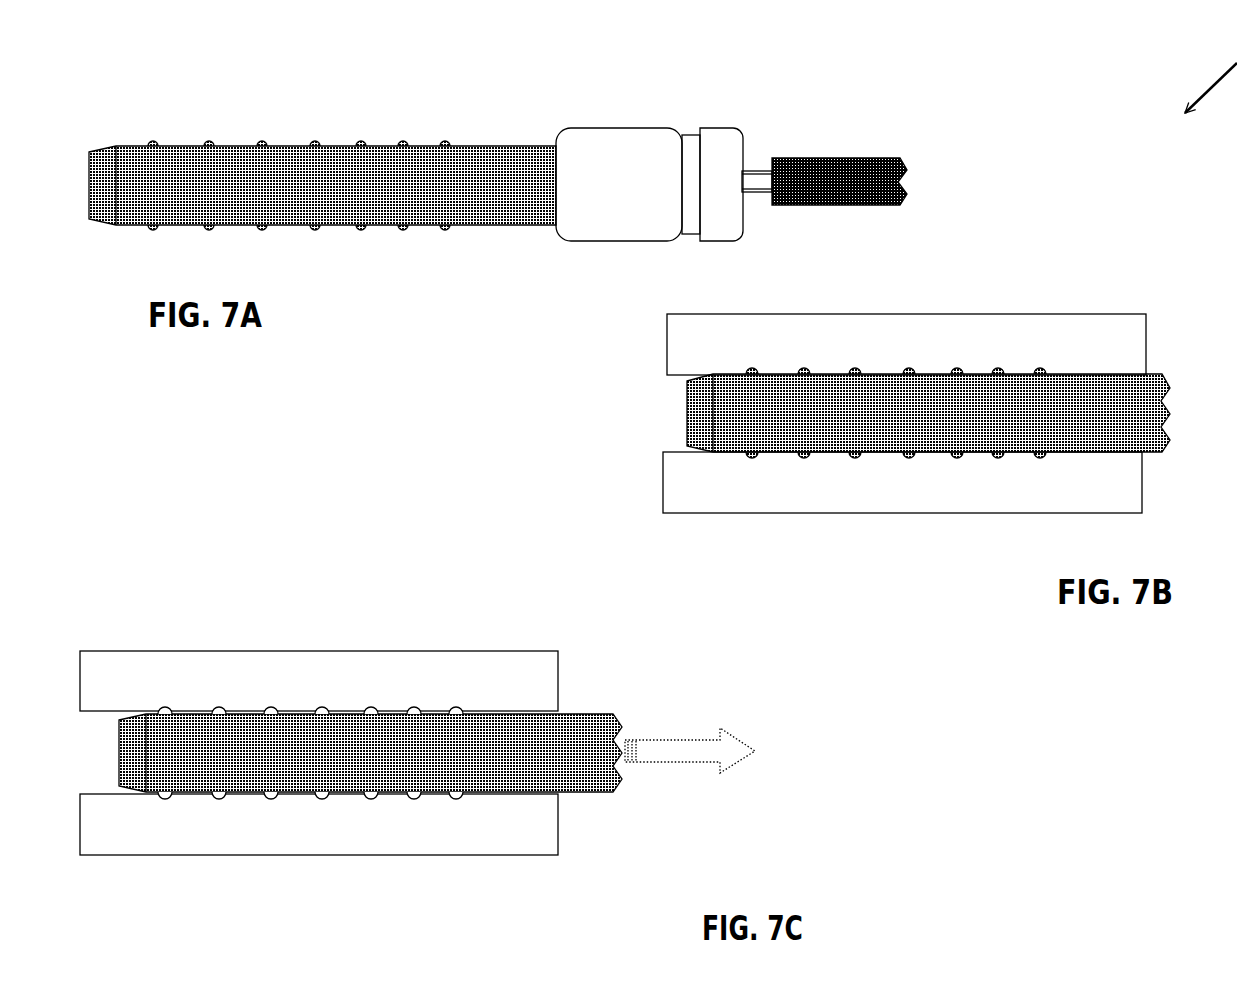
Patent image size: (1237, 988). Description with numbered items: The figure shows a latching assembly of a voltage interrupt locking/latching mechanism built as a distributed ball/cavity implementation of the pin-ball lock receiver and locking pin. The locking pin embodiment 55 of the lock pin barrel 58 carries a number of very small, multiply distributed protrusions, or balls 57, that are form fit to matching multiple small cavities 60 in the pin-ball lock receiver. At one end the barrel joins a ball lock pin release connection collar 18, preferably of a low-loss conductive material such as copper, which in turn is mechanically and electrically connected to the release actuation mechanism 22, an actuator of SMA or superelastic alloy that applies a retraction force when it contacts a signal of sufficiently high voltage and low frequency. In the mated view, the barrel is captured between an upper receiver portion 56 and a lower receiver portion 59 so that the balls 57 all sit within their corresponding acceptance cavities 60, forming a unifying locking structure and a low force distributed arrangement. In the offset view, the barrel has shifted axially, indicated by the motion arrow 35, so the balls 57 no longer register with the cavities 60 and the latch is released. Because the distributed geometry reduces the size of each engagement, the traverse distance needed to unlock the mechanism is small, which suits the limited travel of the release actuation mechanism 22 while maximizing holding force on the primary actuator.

In FIG. 7A, the ball lock pin release connection collar 18 is at (752, 184).
In FIG. 7A, the release actuation mechanism 22 is at (826, 172).
In FIG. 7C, the direction of movement arrow 35 is at (671, 771).
In FIG. 7B, the locking pin embodiment 55 is at (1153, 366).
In FIG. 7C, the upper die plate 56 is at (564, 711).
In FIG. 7A, the balls 57 is at (163, 137).
In FIG. 7A, the elongate body 58 is at (600, 160).
In FIG. 7B, the elongate body 58 is at (938, 405).
In FIG. 7C, the elongate body 58 is at (200, 776).
In FIG. 7B, the lower die plate 59 is at (902, 481).
In FIG. 7C, the cavities 60 is at (325, 704).